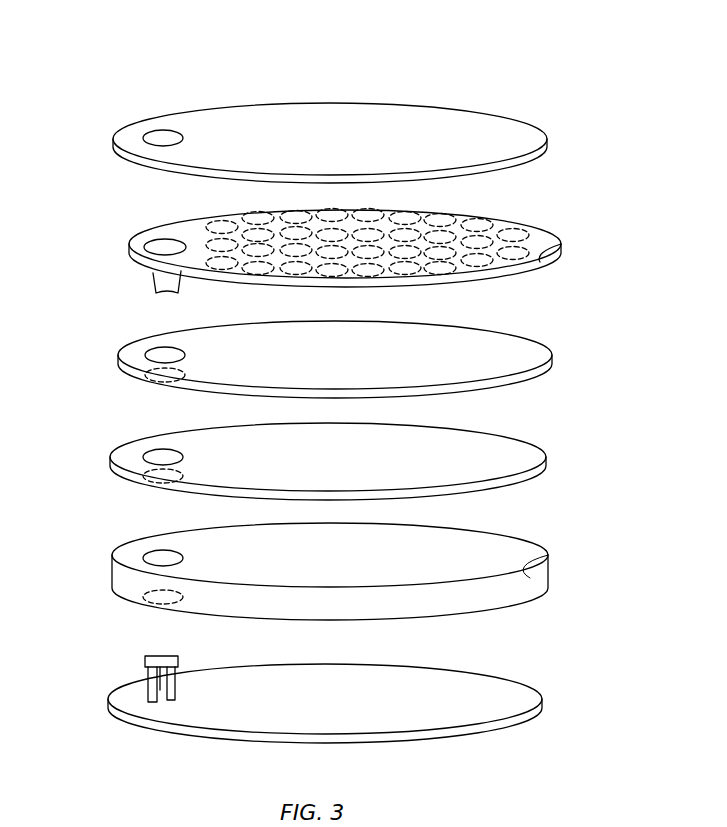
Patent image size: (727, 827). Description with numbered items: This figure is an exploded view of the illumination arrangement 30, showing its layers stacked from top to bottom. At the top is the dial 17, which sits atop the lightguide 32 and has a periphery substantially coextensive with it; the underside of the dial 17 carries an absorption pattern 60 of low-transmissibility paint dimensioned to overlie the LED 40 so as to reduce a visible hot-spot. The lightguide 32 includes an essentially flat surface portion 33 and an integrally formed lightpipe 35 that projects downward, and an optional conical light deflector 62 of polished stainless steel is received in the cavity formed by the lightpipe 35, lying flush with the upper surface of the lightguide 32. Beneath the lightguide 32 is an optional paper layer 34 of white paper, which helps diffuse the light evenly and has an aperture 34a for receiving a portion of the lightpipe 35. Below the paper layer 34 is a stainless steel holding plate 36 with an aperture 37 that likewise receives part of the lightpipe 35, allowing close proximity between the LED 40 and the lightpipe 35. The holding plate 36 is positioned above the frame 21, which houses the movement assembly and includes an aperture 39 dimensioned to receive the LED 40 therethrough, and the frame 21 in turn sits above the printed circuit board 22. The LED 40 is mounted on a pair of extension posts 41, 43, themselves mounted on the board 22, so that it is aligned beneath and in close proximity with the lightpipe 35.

The illumination arrangement 30 is at (103, 74).
The dial 17 is at (510, 128).
The absorption pattern 60 is at (160, 135).
The conical light deflector 62 is at (155, 247).
The lightguide 32 is at (530, 201).
The flat surface portion 33 is at (560, 243).
The lightpipe 35 is at (160, 283).
The aperture 39 is at (497, 275).
The aperture 34a is at (153, 356).
The paper layer 34 is at (548, 353).
The aperture 37 is at (122, 456).
The holding plate 36 is at (532, 452).
The frame 21 is at (537, 553).
The printed circuit board 22 is at (525, 690).
The LED 40 is at (150, 660).
The extension post 41 is at (152, 700).
The extension post 43 is at (170, 698).